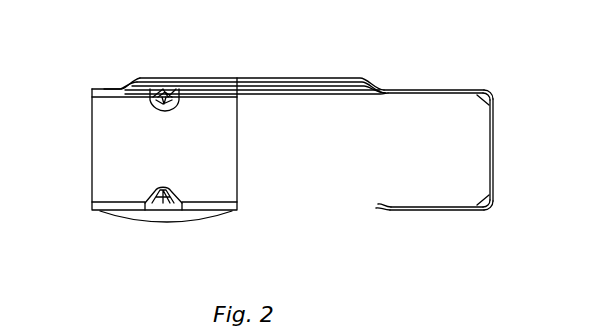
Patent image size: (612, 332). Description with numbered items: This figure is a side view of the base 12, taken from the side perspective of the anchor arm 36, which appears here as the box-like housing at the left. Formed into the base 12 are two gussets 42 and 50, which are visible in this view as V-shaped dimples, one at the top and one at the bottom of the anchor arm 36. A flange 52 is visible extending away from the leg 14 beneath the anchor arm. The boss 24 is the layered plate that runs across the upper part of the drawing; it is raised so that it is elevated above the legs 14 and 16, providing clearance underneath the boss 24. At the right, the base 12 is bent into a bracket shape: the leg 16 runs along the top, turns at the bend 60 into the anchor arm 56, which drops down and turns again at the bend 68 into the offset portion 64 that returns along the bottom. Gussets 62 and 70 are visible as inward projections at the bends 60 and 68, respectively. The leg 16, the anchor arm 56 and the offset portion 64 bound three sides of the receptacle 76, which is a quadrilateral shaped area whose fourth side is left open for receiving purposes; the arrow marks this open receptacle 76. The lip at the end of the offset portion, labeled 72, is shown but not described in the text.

The base 12 is at (387, 73).
The leg 14 is at (109, 88).
The leg 16 is at (428, 90).
The boss 24 is at (283, 77).
The anchor arm 36 is at (116, 155).
The gusset 42 is at (166, 95).
The gusset 50 is at (168, 203).
The flange 52 is at (147, 218).
The anchor arm 56 is at (496, 128).
The bend 60 is at (496, 91).
The gusset 62 is at (485, 98).
The offset portion 64 is at (405, 212).
The bend 68 is at (490, 212).
The gusset 70 is at (484, 198).
The lower lip 72 is at (373, 209).
The receptacle 76 is at (390, 153).